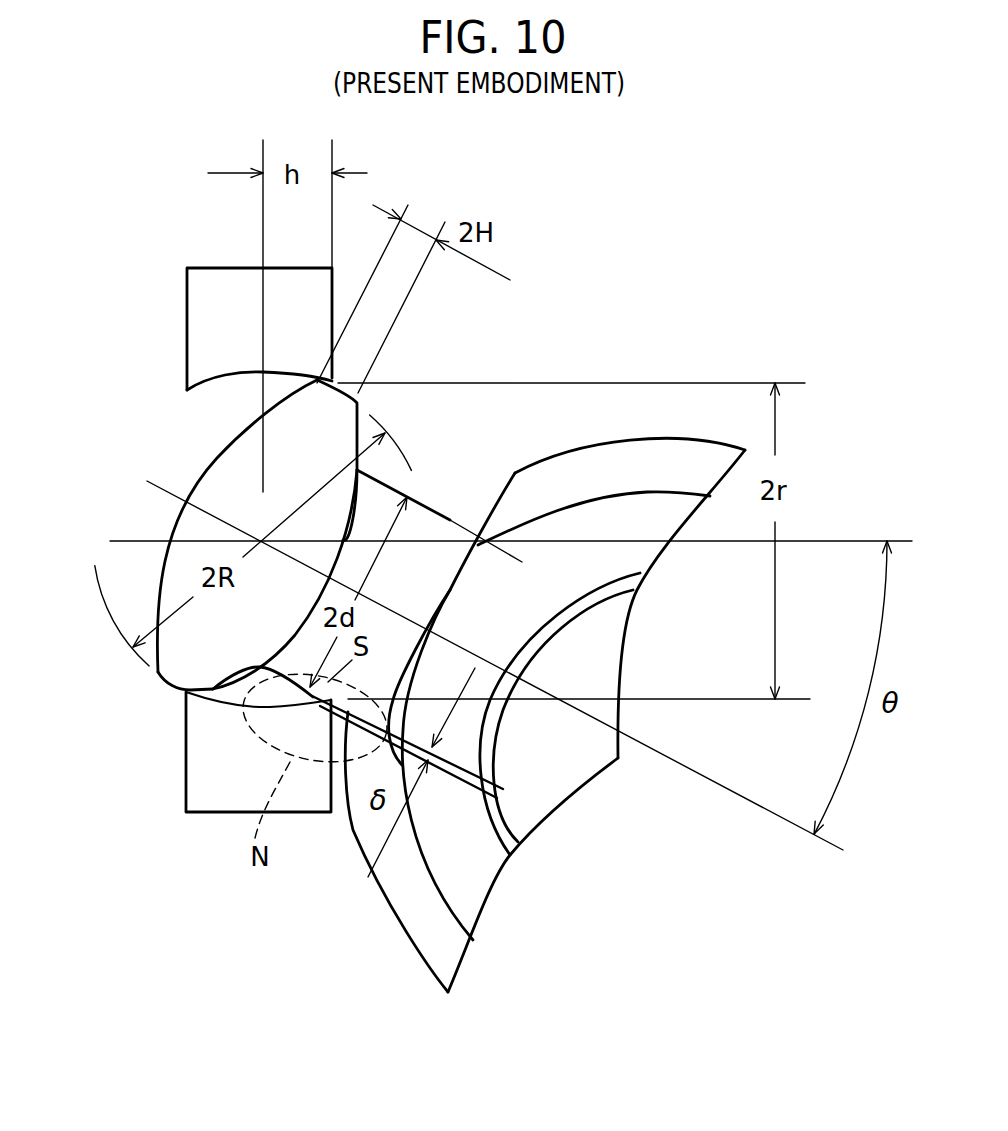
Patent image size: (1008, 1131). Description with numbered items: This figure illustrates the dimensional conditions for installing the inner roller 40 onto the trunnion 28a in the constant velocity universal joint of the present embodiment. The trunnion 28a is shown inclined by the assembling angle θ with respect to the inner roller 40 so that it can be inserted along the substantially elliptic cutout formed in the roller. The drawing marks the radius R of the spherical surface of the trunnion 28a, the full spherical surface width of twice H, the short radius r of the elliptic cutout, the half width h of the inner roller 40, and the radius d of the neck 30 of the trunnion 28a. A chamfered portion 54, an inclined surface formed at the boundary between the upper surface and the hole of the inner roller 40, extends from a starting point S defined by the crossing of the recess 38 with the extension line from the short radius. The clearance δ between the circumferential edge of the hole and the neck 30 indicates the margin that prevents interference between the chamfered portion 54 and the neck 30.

The trunnion 28a is at (232, 462).
The neck 30 is at (420, 530).
The recess 38 is at (187, 690).
The inner roller 40 is at (205, 772).
The chamfered portion 54 is at (340, 697).